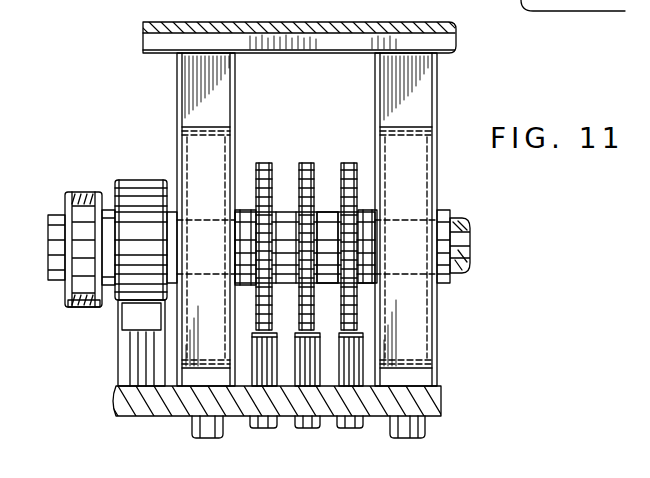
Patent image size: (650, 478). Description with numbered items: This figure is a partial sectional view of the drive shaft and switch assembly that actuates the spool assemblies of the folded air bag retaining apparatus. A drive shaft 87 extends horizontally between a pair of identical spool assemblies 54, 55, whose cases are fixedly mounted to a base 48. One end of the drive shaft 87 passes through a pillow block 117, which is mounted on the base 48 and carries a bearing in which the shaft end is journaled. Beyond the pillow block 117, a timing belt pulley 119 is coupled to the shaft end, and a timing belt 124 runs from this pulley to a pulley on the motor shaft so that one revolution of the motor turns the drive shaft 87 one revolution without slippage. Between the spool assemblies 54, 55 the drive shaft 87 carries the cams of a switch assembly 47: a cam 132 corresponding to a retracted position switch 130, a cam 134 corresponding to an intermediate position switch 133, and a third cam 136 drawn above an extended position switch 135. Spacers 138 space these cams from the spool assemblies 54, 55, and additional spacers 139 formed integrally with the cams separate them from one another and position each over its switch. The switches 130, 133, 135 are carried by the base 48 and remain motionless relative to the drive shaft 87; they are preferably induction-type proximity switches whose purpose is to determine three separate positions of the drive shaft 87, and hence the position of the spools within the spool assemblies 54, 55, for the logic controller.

The switch assembly 47 is at (287, 192).
The base 48 is at (430, 400).
The spool assembly 54 is at (177, 133).
The spool assembly 55 is at (437, 97).
The drive shaft 87 is at (468, 222).
The pillow block 117 is at (110, 205).
The timing belt pulley 119 is at (62, 195).
The timing belt 124 is at (85, 307).
The retracted position switch 130 is at (263, 362).
The cam 132 is at (256, 163).
The intermediate position switch 133 is at (308, 378).
The cam 134 is at (303, 163).
The extended position switch 135 is at (358, 368).
The sprocket 136 is at (350, 160).
The spacer 138 is at (247, 212).
The spacer 139 is at (323, 172).